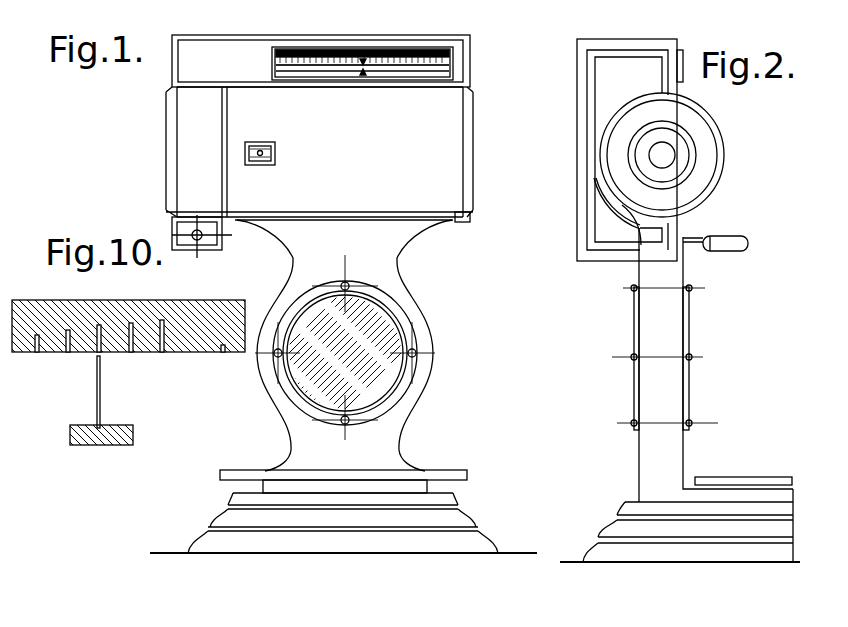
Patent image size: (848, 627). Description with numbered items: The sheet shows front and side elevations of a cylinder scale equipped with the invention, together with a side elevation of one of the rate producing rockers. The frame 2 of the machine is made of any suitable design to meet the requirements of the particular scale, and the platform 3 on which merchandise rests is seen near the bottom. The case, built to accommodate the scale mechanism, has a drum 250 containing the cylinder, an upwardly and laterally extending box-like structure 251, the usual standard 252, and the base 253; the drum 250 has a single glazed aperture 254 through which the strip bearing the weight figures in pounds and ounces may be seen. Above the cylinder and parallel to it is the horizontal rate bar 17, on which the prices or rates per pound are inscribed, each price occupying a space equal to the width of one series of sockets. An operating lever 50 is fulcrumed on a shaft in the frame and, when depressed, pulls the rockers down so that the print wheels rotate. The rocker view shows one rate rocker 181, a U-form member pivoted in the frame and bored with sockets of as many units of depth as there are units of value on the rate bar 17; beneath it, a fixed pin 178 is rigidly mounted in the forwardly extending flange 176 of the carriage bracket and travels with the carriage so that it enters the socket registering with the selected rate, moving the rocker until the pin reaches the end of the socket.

In FIG. 1, the frame 2 is at (373, 158).
In FIG. 2, the frame 2 is at (585, 229).
In FIG. 1, the platform 3 is at (346, 470).
In FIG. 2, the platform 3 is at (750, 477).
In FIG. 1, the rate bar 17 is at (363, 60).
In FIG. 1, the operating lever 50 is at (202, 238).
In FIG. 2, the operating lever 50 is at (692, 246).
In FIG. 10, the forwardly extending flange 176 is at (72, 427).
In FIG. 10, the pin 178 is at (101, 393).
In FIG. 10, the rate rocker 181 is at (185, 353).
In FIG. 1, the drum 250 is at (319, 128).
In FIG. 2, the drum 250 is at (710, 148).
In FIG. 1, the box-like structure 251 is at (199, 168).
In FIG. 2, the box-like structure 251 is at (597, 123).
In FIG. 1, the standard 252 is at (428, 333).
In FIG. 2, the standard 252 is at (675, 372).
In FIG. 1, the base 253 is at (463, 528).
In FIG. 2, the base 253 is at (627, 527).
In FIG. 1, the glazed aperture 254 is at (274, 150).